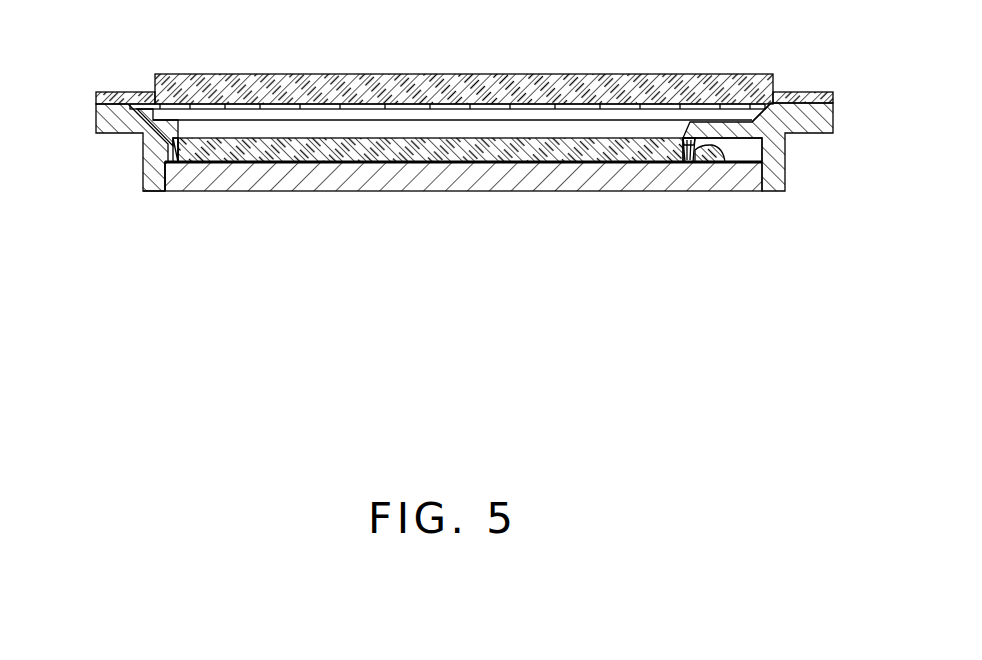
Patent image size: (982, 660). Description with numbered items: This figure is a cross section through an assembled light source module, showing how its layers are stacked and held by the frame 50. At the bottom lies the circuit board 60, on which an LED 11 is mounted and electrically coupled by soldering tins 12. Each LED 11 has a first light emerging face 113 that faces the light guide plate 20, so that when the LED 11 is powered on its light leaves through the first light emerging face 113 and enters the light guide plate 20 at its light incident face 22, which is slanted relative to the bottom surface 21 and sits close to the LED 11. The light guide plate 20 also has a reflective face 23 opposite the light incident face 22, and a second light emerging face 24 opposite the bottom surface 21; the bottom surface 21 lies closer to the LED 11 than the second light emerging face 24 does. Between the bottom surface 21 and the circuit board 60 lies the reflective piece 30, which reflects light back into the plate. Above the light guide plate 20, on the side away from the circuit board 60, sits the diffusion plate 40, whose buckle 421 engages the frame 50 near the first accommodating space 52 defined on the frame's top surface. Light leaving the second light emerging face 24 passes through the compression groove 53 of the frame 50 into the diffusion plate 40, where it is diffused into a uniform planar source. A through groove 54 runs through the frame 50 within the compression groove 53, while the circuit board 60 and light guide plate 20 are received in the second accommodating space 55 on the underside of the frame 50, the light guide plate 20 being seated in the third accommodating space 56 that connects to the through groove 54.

The LED 11 is at (676, 199).
The first light emerging face 113 is at (683, 152).
The soldering tin 12 is at (703, 150).
The light guide plate 20 is at (452, 127).
The bottom surface 21 is at (488, 160).
The light incident face 22 is at (668, 140).
The reflective face 23 is at (210, 150).
The second light emerging face 24 is at (530, 135).
The reflective piece 30 is at (242, 163).
The diffusion plate 40 is at (220, 82).
The buckle 421 is at (430, 106).
The frame 50 is at (445, 148).
The first accommodating space 52 is at (795, 108).
The compression groove 53 is at (760, 115).
The through groove 54 is at (313, 127).
The second accommodating space 55 is at (163, 180).
The third accommodating space 56 is at (175, 143).
The circuit board 60 is at (510, 178).